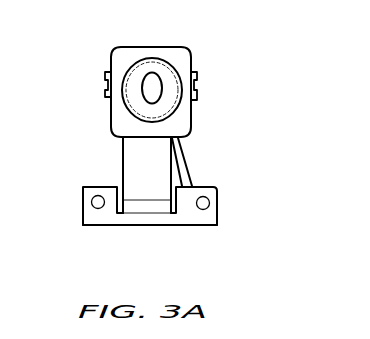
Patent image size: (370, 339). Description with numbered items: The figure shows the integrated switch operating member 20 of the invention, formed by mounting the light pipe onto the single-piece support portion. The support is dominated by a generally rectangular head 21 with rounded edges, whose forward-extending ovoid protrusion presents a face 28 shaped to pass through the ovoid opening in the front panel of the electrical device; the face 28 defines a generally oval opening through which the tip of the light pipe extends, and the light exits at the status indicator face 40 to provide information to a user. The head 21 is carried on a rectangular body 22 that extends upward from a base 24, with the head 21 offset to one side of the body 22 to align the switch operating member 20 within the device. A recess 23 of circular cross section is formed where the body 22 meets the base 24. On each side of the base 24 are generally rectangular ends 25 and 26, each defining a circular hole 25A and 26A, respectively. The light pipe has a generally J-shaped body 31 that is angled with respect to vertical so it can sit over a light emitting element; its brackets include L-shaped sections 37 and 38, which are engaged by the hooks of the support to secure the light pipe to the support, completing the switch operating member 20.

The switch operating member 20 is at (157, 139).
The head 21 is at (113, 130).
The body 22 is at (131, 171).
The recess 23 is at (153, 212).
The base 24 is at (172, 225).
The end 25 is at (218, 190).
The circular hole 25A is at (207, 208).
The end 26 is at (85, 202).
The circular hole 26A is at (98, 210).
The face 28 is at (157, 87).
The body 31 is at (190, 166).
The L-shaped section 37 is at (197, 91).
The L-shaped section 38 is at (107, 97).
The status indicator face 40 is at (160, 85).